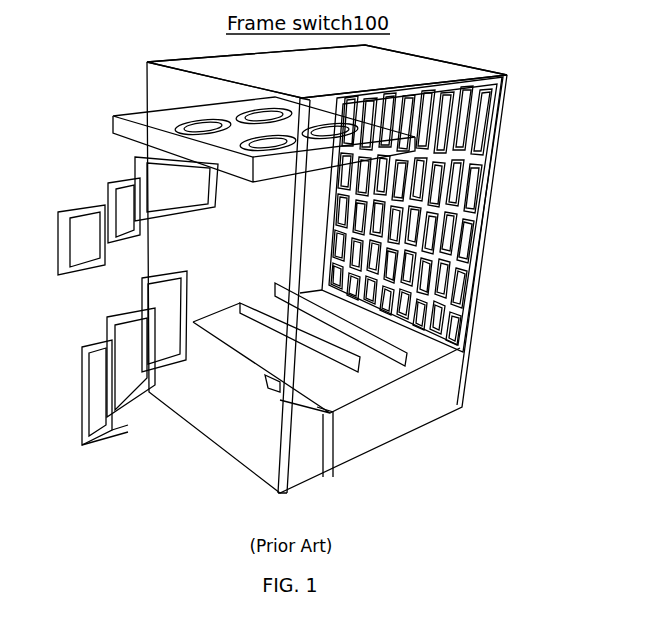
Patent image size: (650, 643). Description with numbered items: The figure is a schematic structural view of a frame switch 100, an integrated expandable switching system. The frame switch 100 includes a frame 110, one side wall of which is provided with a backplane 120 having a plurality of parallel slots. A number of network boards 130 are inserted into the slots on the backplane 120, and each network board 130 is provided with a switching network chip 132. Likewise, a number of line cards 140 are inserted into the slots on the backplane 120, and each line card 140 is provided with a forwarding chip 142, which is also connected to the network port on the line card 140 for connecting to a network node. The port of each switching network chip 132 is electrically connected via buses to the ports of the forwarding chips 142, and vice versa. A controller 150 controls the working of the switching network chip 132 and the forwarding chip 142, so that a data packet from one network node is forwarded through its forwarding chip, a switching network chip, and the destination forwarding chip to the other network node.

The frame switch 100 is at (327, 269).
The frame 110 is at (437, 74).
The backplane 120 is at (483, 226).
The network board 130 is at (60, 238).
The switching network chip 132 is at (85, 218).
The line card 140 is at (80, 410).
The forwarding chip 142 is at (97, 350).
The controller 150 is at (143, 132).